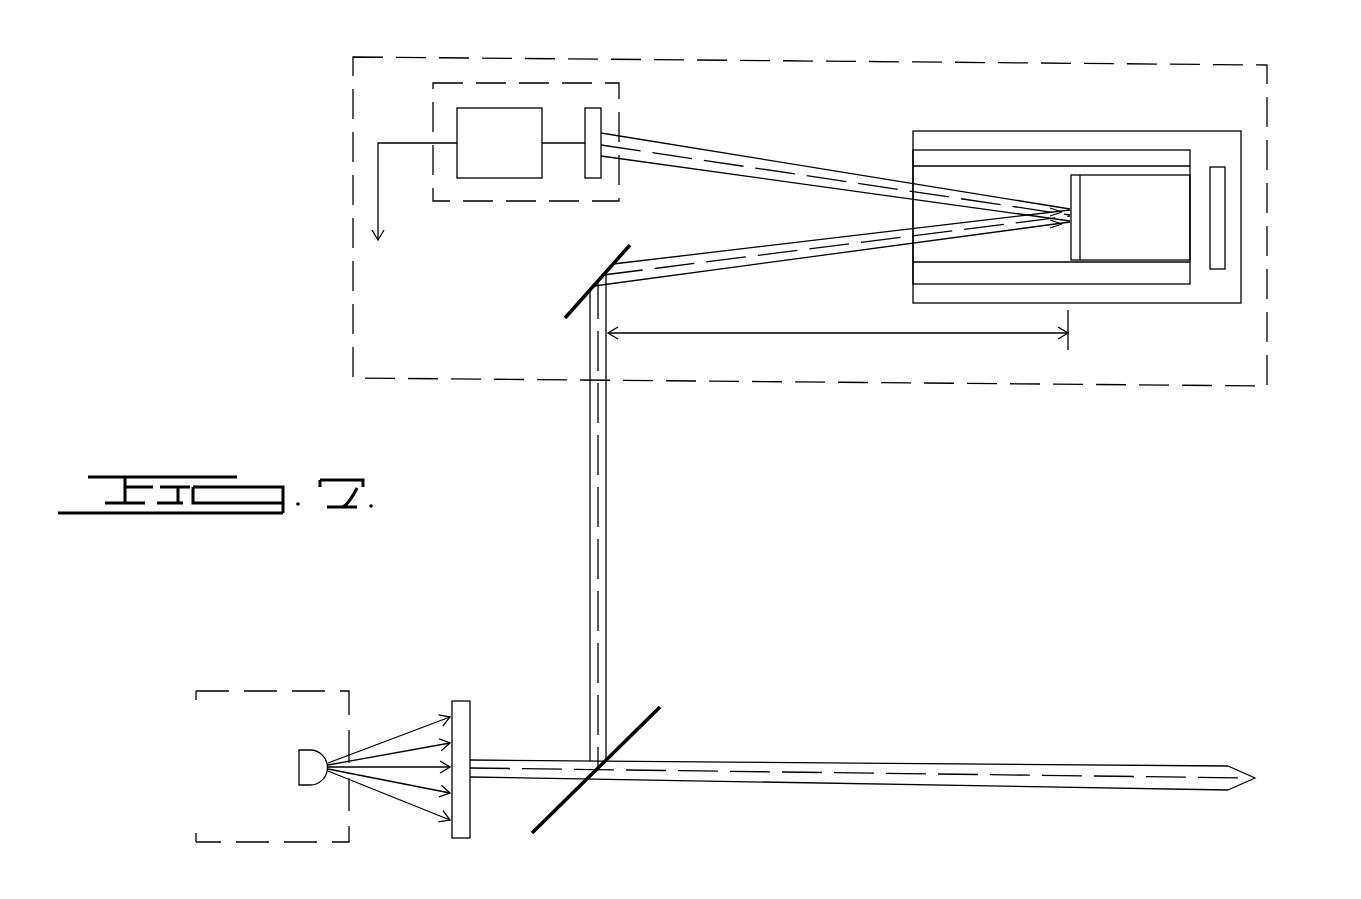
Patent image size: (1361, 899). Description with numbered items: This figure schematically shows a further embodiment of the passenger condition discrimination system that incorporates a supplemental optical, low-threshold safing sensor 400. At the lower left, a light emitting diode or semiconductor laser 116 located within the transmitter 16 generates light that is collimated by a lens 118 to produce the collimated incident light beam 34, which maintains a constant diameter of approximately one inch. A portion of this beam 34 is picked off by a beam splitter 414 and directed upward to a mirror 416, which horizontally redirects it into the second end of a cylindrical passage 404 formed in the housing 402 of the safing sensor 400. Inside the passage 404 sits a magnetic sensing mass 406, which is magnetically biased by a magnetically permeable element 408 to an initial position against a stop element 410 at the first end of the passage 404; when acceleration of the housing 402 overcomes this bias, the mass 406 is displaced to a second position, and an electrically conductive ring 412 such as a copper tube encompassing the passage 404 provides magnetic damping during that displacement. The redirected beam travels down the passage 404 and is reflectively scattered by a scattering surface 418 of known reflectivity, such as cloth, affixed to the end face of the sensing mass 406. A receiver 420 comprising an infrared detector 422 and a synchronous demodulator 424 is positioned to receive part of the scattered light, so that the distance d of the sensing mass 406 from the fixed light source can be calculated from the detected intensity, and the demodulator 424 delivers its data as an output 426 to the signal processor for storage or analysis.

The transmitter 16 is at (212, 690).
The collimated incident light beam 34 is at (930, 786).
The light emitting diode or semiconductor laser 116 is at (297, 778).
The lens 118 is at (463, 699).
The optical low-threshold safing sensor 400 is at (830, 60).
The housing 402 is at (950, 131).
The cylindrical passage 404 is at (1025, 165).
The magnetic sensing mass 406 is at (1135, 262).
The magnetically permeable element 408 is at (1217, 270).
The stop element 410 is at (1202, 166).
The electrically conductive ring 412 is at (1172, 150).
The beam splitter 414 is at (640, 722).
The mirror 416 is at (571, 306).
The scattering surface 418 is at (1076, 165).
The receiver 420 is at (533, 82).
The infrared detector 422 is at (593, 107).
The synchronous demodulator 424 is at (457, 121).
The output 426 is at (378, 174).
The distance of the sensing mass d is at (838, 330).